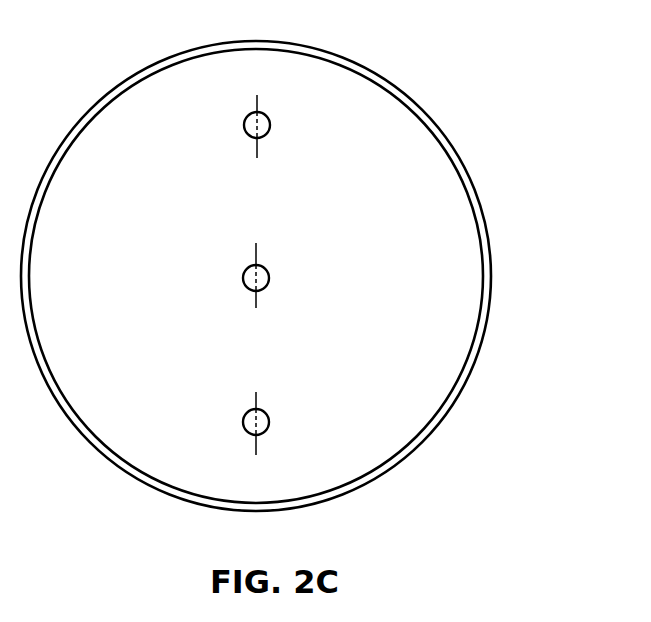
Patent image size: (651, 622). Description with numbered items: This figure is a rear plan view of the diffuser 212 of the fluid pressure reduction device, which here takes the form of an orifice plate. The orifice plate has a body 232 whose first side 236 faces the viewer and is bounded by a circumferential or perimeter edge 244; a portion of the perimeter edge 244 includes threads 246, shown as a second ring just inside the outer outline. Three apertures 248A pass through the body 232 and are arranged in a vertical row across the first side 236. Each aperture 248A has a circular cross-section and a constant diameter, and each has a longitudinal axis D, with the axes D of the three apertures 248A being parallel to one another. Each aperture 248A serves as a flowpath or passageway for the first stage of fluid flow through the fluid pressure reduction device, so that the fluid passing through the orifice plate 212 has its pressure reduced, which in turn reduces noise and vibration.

The diffuser 212 is at (311, 264).
The body 232 is at (311, 264).
The perimeter edge 244 is at (311, 276).
The threads 246 is at (463, 159).
The first side 236 is at (374, 222).
The apertures 248A is at (247, 136).